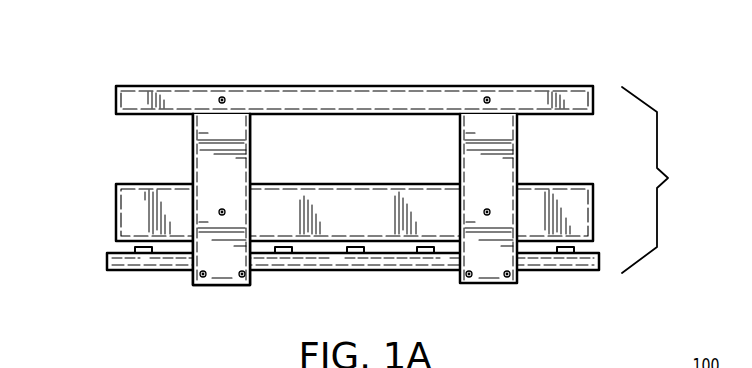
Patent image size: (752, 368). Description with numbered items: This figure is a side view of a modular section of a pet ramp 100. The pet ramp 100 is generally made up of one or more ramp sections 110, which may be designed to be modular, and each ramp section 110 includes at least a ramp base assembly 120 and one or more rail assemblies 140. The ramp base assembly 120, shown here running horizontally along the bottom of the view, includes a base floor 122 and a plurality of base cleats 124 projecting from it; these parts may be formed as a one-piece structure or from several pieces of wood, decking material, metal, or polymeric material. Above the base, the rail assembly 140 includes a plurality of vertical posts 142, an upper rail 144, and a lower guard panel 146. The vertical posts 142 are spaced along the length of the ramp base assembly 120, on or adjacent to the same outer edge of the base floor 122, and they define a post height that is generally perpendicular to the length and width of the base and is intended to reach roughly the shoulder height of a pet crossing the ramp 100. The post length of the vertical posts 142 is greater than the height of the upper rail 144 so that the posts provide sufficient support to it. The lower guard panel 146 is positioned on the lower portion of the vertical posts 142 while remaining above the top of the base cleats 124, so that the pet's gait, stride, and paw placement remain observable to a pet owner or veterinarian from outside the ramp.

The pet ramp 100 is at (363, 161).
The ramp section 110 is at (374, 178).
The ramp base assembly 120 is at (318, 279).
The base floor 122 is at (353, 280).
The base cleats 124 is at (354, 279).
The rail assembly 140 is at (332, 138).
The vertical posts 142 is at (456, 158).
The upper rail 144 is at (354, 74).
The lower guard panel 146 is at (374, 190).